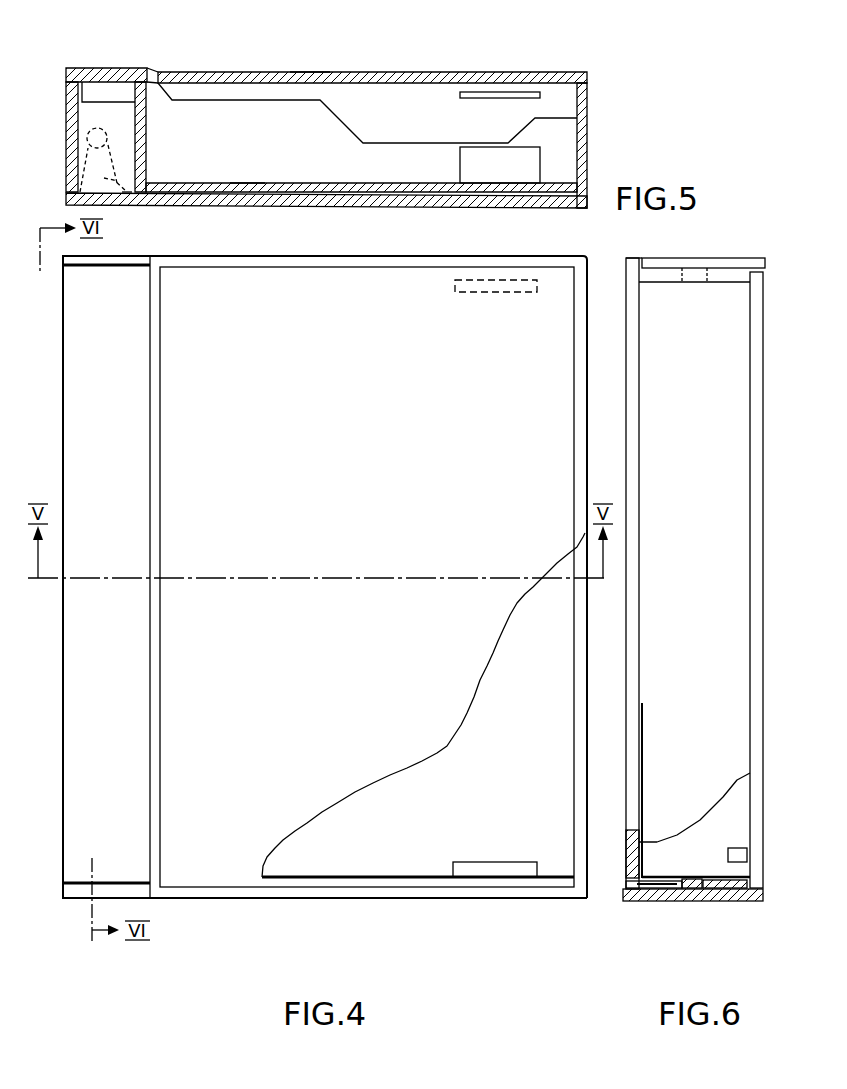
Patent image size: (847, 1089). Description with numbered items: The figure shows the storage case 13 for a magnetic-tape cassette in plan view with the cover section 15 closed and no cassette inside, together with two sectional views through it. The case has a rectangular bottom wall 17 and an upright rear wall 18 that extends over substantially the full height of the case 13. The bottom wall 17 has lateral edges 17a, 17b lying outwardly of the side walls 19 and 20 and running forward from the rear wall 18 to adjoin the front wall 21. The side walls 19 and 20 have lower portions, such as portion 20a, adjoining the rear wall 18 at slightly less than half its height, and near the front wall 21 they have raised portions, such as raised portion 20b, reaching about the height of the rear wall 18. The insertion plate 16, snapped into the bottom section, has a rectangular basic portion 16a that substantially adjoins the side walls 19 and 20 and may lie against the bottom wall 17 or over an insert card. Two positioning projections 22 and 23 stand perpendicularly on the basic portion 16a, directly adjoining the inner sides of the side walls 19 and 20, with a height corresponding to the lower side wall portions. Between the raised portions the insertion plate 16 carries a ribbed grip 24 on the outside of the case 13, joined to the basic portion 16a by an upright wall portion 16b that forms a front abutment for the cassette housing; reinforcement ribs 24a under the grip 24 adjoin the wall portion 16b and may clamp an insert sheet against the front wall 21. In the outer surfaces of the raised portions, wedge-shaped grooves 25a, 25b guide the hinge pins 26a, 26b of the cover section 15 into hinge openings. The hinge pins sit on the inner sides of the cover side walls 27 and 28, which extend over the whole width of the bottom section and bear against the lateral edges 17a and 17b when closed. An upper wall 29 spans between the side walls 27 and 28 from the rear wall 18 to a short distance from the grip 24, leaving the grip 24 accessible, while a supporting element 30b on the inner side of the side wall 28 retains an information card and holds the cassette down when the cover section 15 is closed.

In FIG. 5, the storage case 13 is at (400, 68).
In FIG. 4, the storage case 13 is at (310, 904).
In FIG. 6, the storage case 13 is at (765, 664).
In FIG. 5, the cover section 15 is at (201, 67).
In FIG. 5, the insertion plate 16 is at (313, 183).
In FIG. 5, the basic portion 16a is at (247, 183).
In FIG. 5, the upright wall portion 16b is at (146, 155).
In FIG. 6, the upright wall portion 16b is at (732, 803).
In FIG. 5, the bottom wall 17 is at (451, 207).
In FIG. 6, the bottom wall 17 is at (633, 655).
In FIG. 6, the lateral edge 17a is at (623, 893).
In FIG. 6, the lateral edge 17b is at (634, 262).
In FIG. 5, the rear wall 18 is at (587, 138).
In FIG. 4, the rear wall 18 is at (581, 422).
In FIG. 6, the side wall 19 is at (723, 888).
In FIG. 5, the side wall 20 is at (229, 118).
In FIG. 6, the side wall 20 is at (740, 275).
In FIG. 5, the side wall portion 20a is at (390, 160).
In FIG. 5, the raised portion 20b is at (120, 115).
In FIG. 5, the front wall 21 is at (66, 157).
In FIG. 4, the projection 22 is at (488, 878).
In FIG. 5, the projection 23 is at (481, 163).
In FIG. 4, the projection 23 is at (486, 286).
In FIG. 5, the grip 24 is at (100, 68).
In FIG. 4, the grip 24 is at (82, 400).
In FIG. 6, the grip 24 is at (753, 807).
In FIG. 5, the reinforcement rib 24a is at (92, 92).
In FIG. 6, the reinforcement rib 24a is at (728, 855).
In FIG. 6, the wedge-shaped groove 25a is at (637, 889).
In FIG. 5, the wedge-shaped groove 25b is at (126, 206).
In FIG. 6, the hinge pin 26a is at (690, 884).
In FIG. 5, the hinge pin 26b is at (90, 133).
In FIG. 6, the hinge pin 26b is at (693, 277).
In FIG. 4, the side wall 27 is at (222, 893).
In FIG. 6, the side wall 27 is at (745, 900).
In FIG. 4, the side wall 28 is at (217, 258).
In FIG. 6, the side wall 28 is at (657, 258).
In FIG. 5, the upper wall 29 is at (307, 72).
In FIG. 4, the upper wall 29 is at (556, 490).
In FIG. 5, the supporting element 30b is at (488, 92).